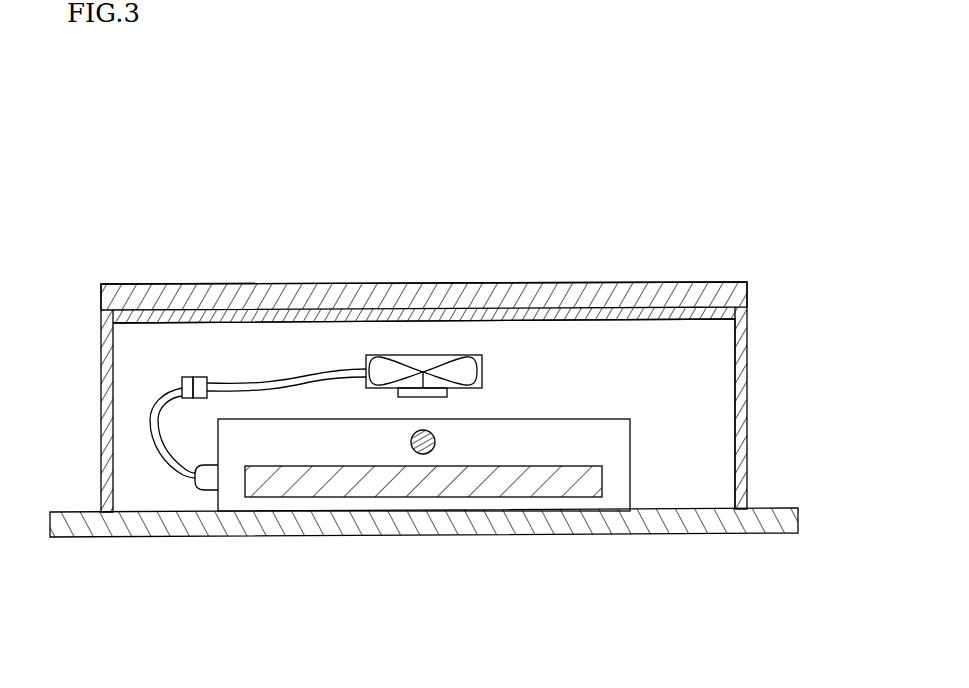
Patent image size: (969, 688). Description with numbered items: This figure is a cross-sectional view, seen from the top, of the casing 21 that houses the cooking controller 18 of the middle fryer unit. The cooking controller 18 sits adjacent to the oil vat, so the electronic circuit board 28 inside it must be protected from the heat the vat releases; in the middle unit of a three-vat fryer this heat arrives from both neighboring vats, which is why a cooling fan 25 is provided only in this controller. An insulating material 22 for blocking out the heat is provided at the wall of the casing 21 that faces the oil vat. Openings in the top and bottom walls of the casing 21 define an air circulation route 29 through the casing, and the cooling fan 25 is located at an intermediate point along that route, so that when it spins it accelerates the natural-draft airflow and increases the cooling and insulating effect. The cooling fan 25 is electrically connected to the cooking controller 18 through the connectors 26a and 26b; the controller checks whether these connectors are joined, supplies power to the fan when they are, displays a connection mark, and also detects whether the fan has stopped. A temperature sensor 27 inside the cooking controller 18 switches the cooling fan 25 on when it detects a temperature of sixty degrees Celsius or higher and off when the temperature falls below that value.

The cooking controller 18 is at (630, 453).
The casing 21 is at (748, 362).
The insulating material 22 is at (600, 282).
The cooling fan 25 is at (425, 355).
The connector 26a is at (183, 377).
The connector 26b is at (203, 377).
The temperature sensor 27 is at (411, 446).
The electronic circuit board 28 is at (530, 470).
The air circulation route 29 is at (535, 360).